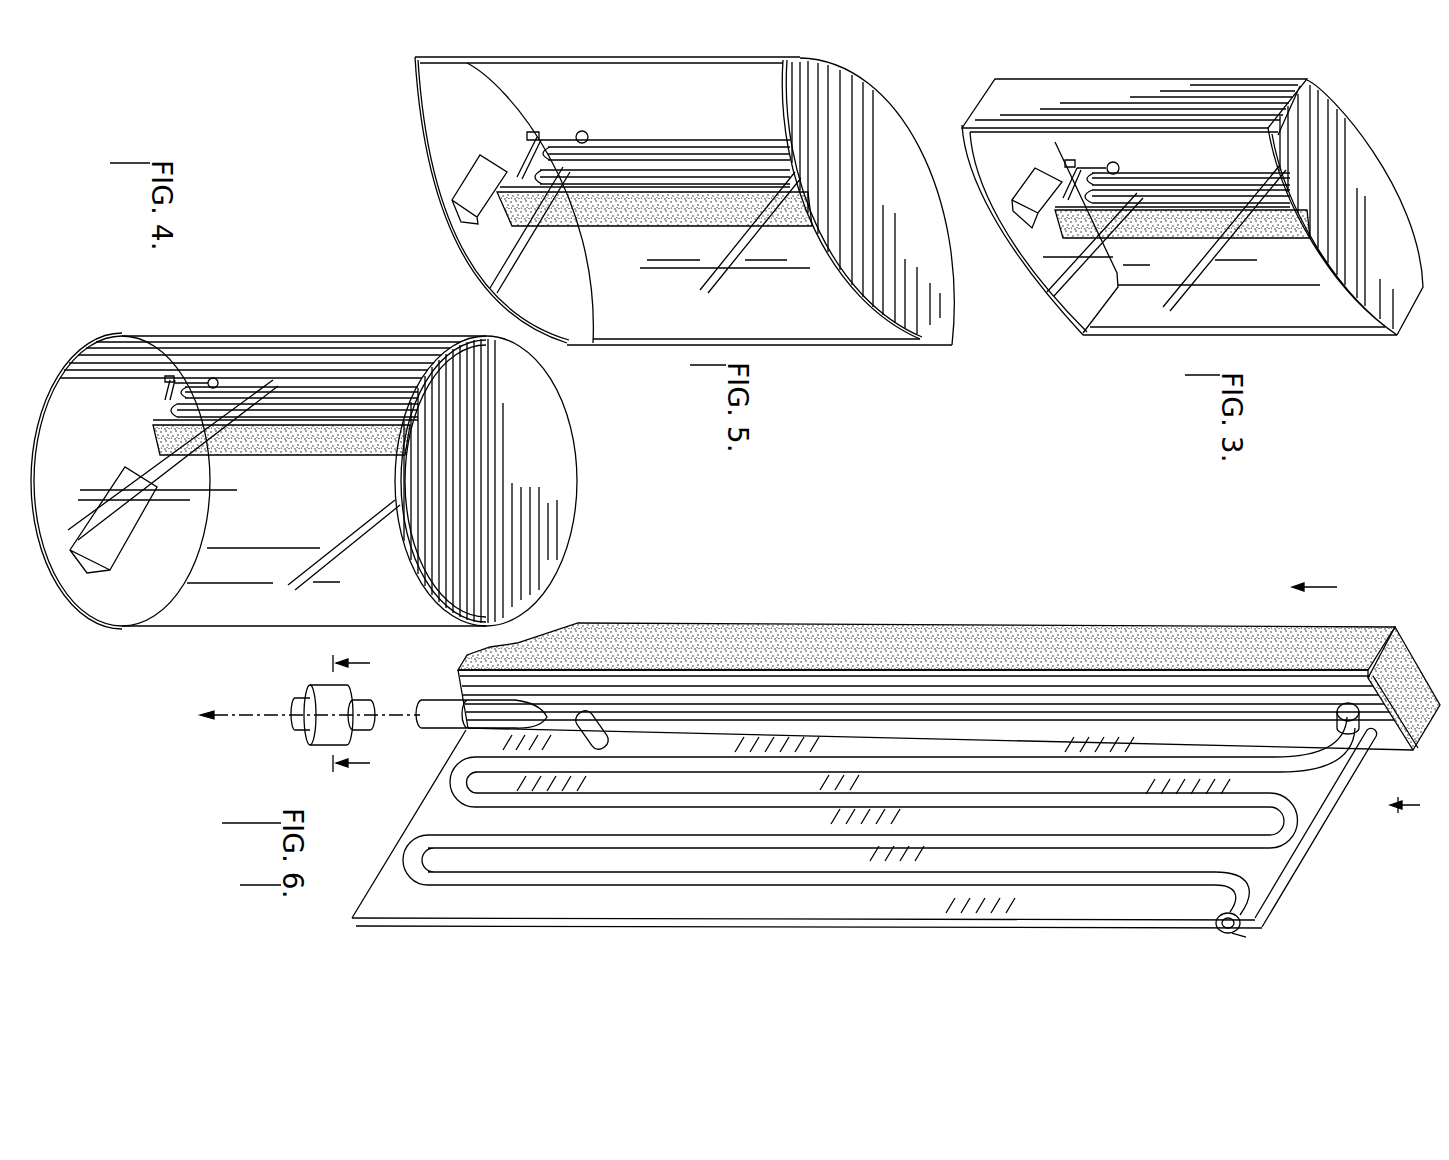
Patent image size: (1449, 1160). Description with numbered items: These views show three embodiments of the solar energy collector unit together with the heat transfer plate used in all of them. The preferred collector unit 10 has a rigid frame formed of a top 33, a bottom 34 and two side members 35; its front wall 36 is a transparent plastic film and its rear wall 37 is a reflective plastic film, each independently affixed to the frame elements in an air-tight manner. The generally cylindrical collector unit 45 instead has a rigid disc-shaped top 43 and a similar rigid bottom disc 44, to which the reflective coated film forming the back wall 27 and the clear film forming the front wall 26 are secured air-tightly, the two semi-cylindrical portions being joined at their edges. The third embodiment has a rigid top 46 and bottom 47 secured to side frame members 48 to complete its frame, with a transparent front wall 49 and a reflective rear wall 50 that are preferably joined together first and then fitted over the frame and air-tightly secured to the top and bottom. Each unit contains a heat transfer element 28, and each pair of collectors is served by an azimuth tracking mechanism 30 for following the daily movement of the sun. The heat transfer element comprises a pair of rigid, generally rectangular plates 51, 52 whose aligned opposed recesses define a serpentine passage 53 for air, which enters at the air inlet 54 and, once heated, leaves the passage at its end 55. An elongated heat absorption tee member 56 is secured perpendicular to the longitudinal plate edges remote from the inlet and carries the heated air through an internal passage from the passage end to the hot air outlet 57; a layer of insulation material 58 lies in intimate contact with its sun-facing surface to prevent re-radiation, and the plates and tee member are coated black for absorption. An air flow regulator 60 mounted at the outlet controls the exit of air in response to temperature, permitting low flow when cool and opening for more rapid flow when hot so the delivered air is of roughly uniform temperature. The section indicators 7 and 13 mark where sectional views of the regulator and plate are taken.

In FIG. 3, the collector unit 10 is at (1252, 345).
In FIG. 6, the section line 13- 13 is at (1365, 706).
In FIG. 4, the front wall 26 is at (225, 627).
In FIG. 4, the back wall 27 is at (355, 336).
In FIG. 5, the heat transfer element 28 is at (636, 236).
In FIG. 3, the heat transfer element 28 is at (1168, 162).
In FIG. 4, the heat transfer element 28 is at (278, 465).
In FIG. 6, the heat transfer element 28 is at (792, 615).
In FIG. 5, the azimuth tracking mechanism 30 is at (460, 166).
In FIG. 3, the azimuth tracking mechanism 30 is at (1013, 181).
In FIG. 4, the azimuth tracking mechanism 30 is at (143, 580).
In FIG. 3, the top 33 is at (1393, 212).
In FIG. 3, the bottom 34 is at (1078, 312).
In FIG. 3, the side members 35 is at (1090, 80).
In FIG. 3, the front wall 36 is at (1317, 308).
In FIG. 3, the rear wall 37 is at (1135, 275).
In FIG. 4, the disc-shaped top 43 is at (566, 516).
In FIG. 4, the bottom disc 44 is at (103, 610).
In FIG. 4, the cylindrical collector unit 45 is at (293, 325).
In FIG. 5, the top 46 is at (940, 300).
In FIG. 5, the bottom 47 is at (572, 340).
In FIG. 5, the side frame members 48 is at (633, 63).
In FIG. 5, the front wall 49 is at (631, 339).
In FIG. 5, the rear wall 50 is at (670, 89).
In FIG. 6, the plate 51 is at (390, 868).
In FIG. 6, the plate 52 is at (362, 921).
In FIG. 6, the serpentine passage 53 is at (1287, 822).
In FIG. 6, the air inlet 54 is at (1222, 933).
In FIG. 6, the passage end 55 is at (1355, 730).
In FIG. 6, the heat absorption tee member 56 is at (935, 672).
In FIG. 6, the hot air outlet 57 is at (477, 708).
In FIG. 6, the insulation material 58 is at (1157, 627).
In FIG. 6, the air flow regulator 60 is at (298, 739).
In FIG. 6, the section line 7- 7 is at (338, 712).